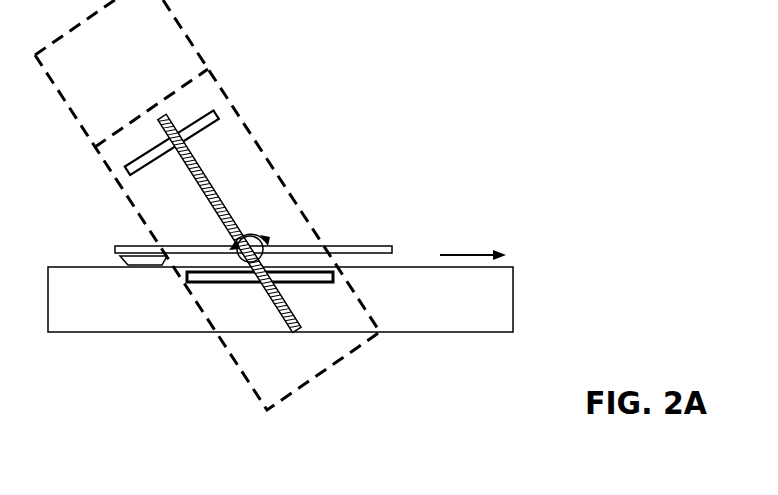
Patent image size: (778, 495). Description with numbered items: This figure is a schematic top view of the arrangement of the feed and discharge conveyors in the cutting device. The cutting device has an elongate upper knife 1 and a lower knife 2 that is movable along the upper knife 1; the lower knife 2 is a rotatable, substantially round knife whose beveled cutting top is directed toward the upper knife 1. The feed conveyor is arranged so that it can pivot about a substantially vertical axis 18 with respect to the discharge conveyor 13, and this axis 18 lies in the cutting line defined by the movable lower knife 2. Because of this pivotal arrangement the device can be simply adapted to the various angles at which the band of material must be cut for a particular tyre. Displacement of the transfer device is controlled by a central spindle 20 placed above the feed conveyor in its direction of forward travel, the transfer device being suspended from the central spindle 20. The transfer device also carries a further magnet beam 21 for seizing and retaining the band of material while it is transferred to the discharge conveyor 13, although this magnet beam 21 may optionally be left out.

The upper knife 1 is at (352, 247).
The lower knife 2 is at (130, 260).
The discharge conveyor 13 is at (479, 312).
The vertical axis 18 is at (242, 267).
The central spindle 20 is at (217, 190).
The further magnet beam 21 is at (216, 112).